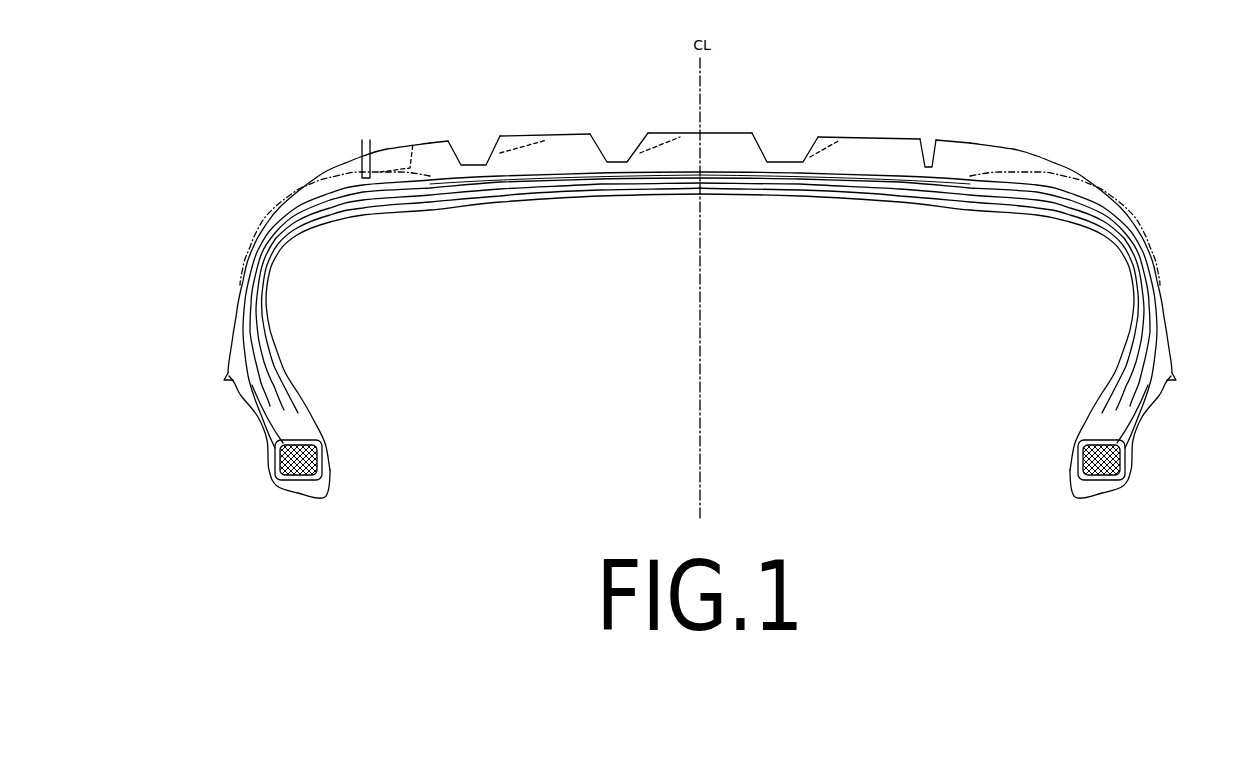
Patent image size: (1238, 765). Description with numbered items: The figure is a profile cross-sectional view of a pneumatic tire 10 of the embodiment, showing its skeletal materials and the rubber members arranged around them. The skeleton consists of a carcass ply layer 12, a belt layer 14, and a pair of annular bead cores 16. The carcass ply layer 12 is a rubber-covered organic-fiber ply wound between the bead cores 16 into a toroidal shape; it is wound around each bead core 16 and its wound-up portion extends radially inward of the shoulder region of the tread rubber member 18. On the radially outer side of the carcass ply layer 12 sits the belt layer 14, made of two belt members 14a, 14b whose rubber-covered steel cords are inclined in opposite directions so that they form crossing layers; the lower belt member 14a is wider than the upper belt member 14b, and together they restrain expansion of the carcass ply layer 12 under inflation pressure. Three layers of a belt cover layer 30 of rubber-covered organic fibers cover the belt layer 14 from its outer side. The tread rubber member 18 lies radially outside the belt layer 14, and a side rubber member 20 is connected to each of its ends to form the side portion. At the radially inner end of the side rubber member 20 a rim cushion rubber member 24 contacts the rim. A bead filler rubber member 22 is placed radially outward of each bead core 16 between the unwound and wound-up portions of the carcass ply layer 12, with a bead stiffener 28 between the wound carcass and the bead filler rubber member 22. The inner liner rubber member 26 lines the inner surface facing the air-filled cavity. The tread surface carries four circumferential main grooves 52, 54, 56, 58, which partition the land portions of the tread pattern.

The tire 10 is at (1053, 118).
The carcass ply layer 12 is at (1090, 230).
The belt layer 14 is at (700, 255).
The belt member 14a is at (885, 177).
The belt member 14b is at (842, 173).
The bead core 16 is at (298, 478).
The tread rubber member 18 is at (350, 167).
The side rubber member 20 is at (237, 303).
The bead filler rubber member 22 is at (272, 433).
The rim cushion rubber member 24 is at (252, 387).
The inner liner rubber member 26 is at (280, 257).
The bead stiffener 28 is at (275, 427).
The belt cover layer 30 is at (364, 148).
The circumferential main groove 52 is at (614, 160).
The circumferential main groove 54 is at (786, 160).
The circumferential main groove 56 is at (472, 162).
The circumferential main groove 58 is at (930, 165).